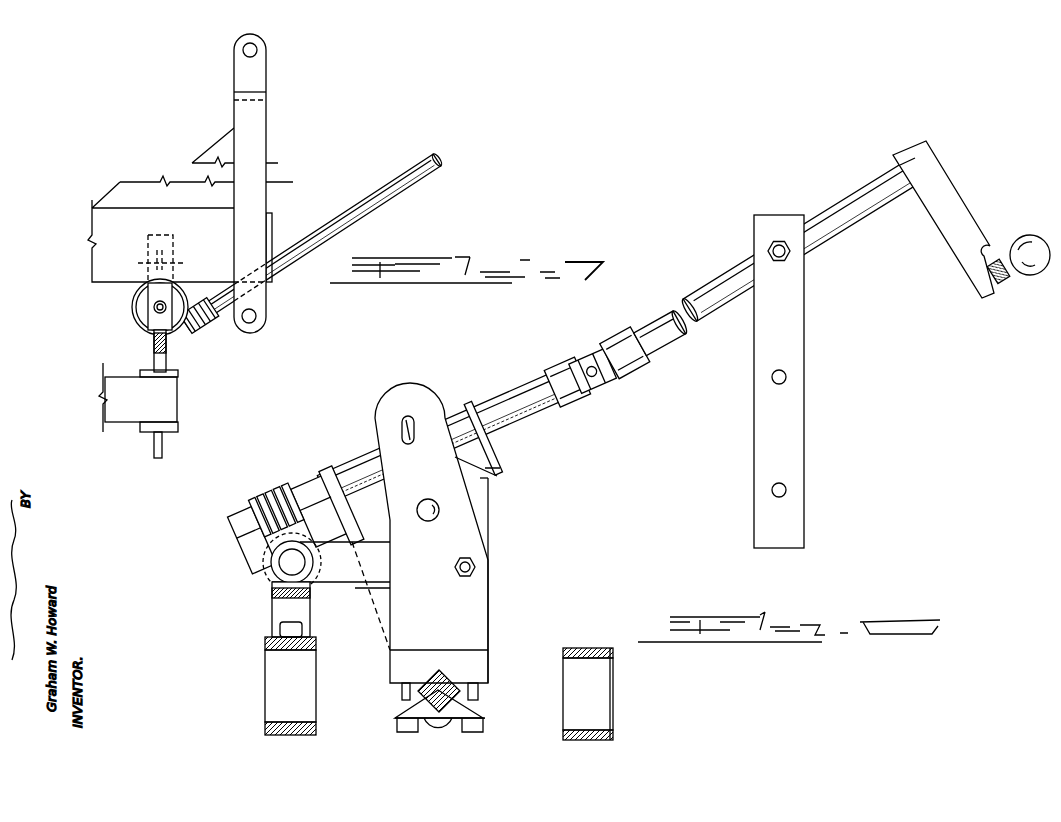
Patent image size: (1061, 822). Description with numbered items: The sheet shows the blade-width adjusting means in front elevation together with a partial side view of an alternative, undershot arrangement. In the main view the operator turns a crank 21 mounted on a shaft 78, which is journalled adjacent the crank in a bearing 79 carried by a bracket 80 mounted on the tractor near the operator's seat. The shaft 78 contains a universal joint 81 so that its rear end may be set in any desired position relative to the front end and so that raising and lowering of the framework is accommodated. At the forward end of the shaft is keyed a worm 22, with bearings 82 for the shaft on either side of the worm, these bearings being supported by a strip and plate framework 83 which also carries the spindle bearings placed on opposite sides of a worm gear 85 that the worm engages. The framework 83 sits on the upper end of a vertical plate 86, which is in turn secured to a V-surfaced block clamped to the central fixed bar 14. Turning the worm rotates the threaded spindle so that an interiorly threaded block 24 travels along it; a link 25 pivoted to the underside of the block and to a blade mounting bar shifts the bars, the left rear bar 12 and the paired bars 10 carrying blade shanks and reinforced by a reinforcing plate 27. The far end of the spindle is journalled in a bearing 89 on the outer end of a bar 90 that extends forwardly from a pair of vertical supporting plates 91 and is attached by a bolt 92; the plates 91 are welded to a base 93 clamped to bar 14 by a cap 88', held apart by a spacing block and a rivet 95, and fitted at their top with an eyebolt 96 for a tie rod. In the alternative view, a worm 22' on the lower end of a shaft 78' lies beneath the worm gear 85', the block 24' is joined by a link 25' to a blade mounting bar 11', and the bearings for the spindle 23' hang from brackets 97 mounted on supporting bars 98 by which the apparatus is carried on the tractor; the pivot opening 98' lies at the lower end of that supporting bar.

In FIG. 6, the bar 10 is at (265, 643).
In FIG. 7, the blade mounting bar 11' is at (159, 410).
In FIG. 6, the left rear bar 12 is at (563, 652).
In FIG. 6, the fixed bar 14 is at (445, 676).
In FIG. 6, the crank 21 is at (955, 208).
In FIG. 6, the worm 22 is at (271, 504).
In FIG. 7, the worm 22' is at (208, 333).
In FIG. 7, the spindle 23' is at (133, 307).
In FIG. 6, the interiorly threaded block 24 is at (271, 593).
In FIG. 7, the block 24' is at (133, 306).
In FIG. 6, the link 25 is at (271, 609).
In FIG. 7, the link 25' is at (140, 351).
In FIG. 6, the reinforcing plate 27 is at (270, 680).
In FIG. 6, the shaft 78 is at (453, 432).
In FIG. 7, the shaft 78' is at (312, 241).
In FIG. 6, the bearing 79 is at (806, 256).
In FIG. 6, the bracket 80 is at (805, 322).
In FIG. 6, the universal joint 81 is at (590, 392).
In FIG. 6, the bearings 82 is at (228, 518).
In FIG. 6, the strip and plate framework 83 is at (500, 468).
In FIG. 6, the worm gear 85 is at (266, 562).
In FIG. 7, the worm gear 85' is at (140, 307).
In FIG. 6, the vertical plate 86 is at (480, 500).
In FIG. 6, the cap 88' is at (420, 707).
In FIG. 6, the bearing 89 is at (306, 562).
In FIG. 6, the bar 90 is at (318, 592).
In FIG. 6, the vertical supporting plates 91 is at (470, 612).
In FIG. 6, the bolt 92 is at (478, 567).
In FIG. 6, the base 93 is at (392, 665).
In FIG. 6, the rivet 95 is at (425, 500).
In FIG. 6, the eyebolt 96 is at (405, 420).
In FIG. 7, the brackets 97 is at (92, 225).
In FIG. 7, the supporting bars 98 is at (270, 183).
In FIG. 7, the pivot hole 98' is at (276, 322).